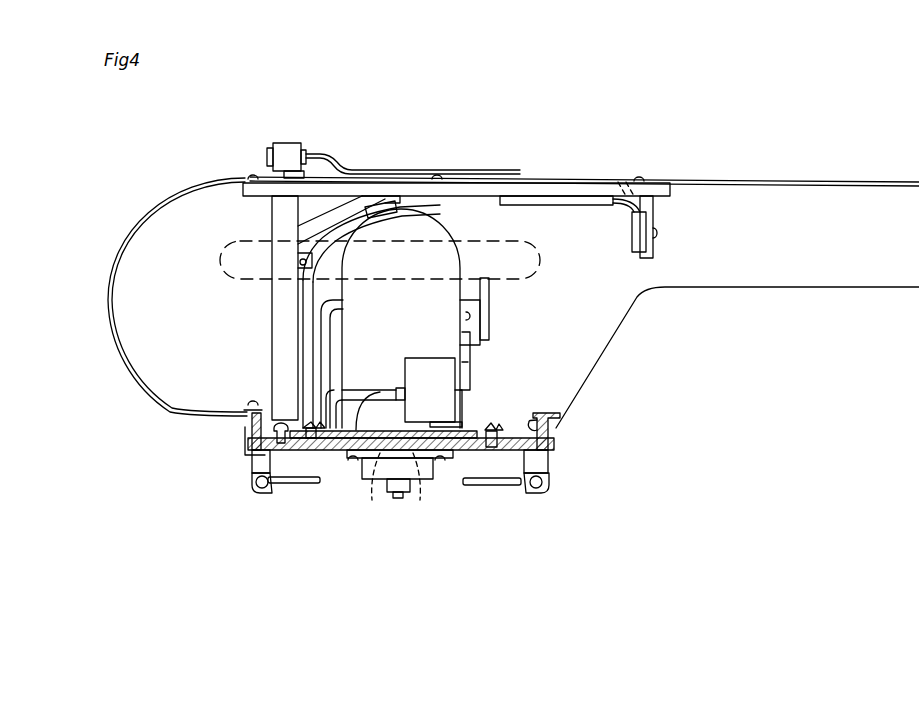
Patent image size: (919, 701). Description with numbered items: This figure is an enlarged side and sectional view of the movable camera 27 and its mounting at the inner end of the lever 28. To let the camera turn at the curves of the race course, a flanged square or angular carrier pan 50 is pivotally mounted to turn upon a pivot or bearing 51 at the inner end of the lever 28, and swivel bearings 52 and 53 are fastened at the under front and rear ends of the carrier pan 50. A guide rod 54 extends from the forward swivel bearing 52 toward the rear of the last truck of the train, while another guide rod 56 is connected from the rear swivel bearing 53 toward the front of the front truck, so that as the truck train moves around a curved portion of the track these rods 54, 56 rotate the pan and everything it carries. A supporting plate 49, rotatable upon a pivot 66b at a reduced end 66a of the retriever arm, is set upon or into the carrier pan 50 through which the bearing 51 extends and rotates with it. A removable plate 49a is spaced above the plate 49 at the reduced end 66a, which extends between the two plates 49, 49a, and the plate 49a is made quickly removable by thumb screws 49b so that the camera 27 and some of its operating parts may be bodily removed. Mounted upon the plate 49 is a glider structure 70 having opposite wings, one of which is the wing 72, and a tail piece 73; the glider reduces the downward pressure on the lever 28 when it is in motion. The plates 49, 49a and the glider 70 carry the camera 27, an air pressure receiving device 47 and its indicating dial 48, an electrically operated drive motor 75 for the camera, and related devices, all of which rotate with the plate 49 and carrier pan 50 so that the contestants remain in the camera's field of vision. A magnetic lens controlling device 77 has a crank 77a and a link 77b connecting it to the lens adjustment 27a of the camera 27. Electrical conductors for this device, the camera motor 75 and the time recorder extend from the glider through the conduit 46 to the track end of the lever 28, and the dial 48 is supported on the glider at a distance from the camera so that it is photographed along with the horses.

The camera 27 is at (433, 223).
The lens adjustment 27a is at (489, 300).
The lever 28 is at (438, 485).
The conduit 46 is at (351, 392).
The air pressure receiving device 47 is at (297, 142).
The indicating dial 48 is at (643, 262).
The supporting plate 49 is at (558, 444).
The removable plate 49a is at (512, 432).
The thumb screws 49b is at (300, 426).
The carrier pan 50 is at (246, 442).
The pivot or bearing 51 is at (391, 483).
The swivel bearing 52 is at (261, 499).
The swivel bearing 53 is at (550, 504).
The guide rod 54 is at (304, 484).
The guide rod 56 is at (484, 486).
The reduced end 66a is at (458, 426).
The pivot 66b is at (413, 506).
The glider structure 70 is at (120, 348).
The wing 72 is at (470, 248).
The tail piece 73 is at (856, 181).
The drive motor 75 is at (415, 368).
The magnetic lens controlling device 77 is at (465, 393).
The crank 77a is at (472, 363).
The link 77b is at (474, 328).